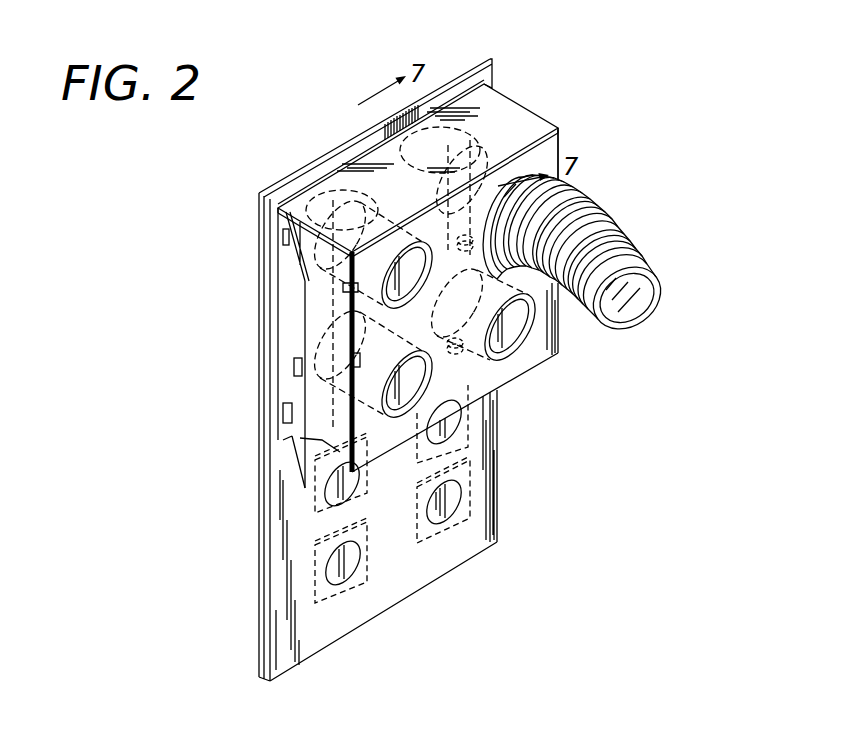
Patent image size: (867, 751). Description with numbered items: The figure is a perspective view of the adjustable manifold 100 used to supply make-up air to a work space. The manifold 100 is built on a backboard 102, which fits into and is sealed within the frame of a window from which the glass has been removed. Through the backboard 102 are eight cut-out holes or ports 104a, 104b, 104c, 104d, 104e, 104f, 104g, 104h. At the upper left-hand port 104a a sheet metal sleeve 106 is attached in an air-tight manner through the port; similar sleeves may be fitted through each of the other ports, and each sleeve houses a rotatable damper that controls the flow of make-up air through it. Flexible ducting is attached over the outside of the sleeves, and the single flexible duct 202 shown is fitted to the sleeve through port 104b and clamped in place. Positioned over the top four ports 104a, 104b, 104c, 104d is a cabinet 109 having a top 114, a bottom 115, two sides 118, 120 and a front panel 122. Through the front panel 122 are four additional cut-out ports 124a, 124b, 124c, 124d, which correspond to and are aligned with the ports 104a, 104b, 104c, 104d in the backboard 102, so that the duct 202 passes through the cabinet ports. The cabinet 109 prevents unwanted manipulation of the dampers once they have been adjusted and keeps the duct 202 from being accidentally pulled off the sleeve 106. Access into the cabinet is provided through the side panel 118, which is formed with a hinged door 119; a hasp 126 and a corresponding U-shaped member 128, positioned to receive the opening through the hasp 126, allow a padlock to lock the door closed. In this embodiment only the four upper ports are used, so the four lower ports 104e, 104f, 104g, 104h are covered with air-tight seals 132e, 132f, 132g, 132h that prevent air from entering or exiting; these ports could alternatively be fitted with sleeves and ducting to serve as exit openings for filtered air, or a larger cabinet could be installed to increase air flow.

The adjustable manifold 100 is at (553, 80).
The backboard 102 is at (277, 473).
The cut-out port 104a is at (283, 250).
The cut-out port 104b is at (455, 140).
The cut-out port 104c is at (327, 353).
The cut-out port 104d is at (480, 268).
The cut-out port 104e is at (330, 500).
The cut-out port 104f is at (452, 443).
The cut-out port 104g is at (333, 576).
The cut-out port 104h is at (458, 505).
The sheet metal sleeve 106 is at (333, 298).
The cabinet 109 is at (338, 178).
The top 114 is at (462, 103).
The bottom 115 is at (297, 440).
The side 118 is at (277, 222).
The hinged door 119 is at (290, 277).
The side 120 is at (535, 120).
The front panel 122 is at (560, 186).
The cut-out port 124a is at (415, 248).
The cut-out port 124b is at (495, 185).
The cut-out port 124c is at (420, 372).
The cut-out port 124d is at (512, 338).
The hasp 126 is at (288, 377).
The U-shaped member 128 is at (300, 438).
The air-tight seal 132e is at (316, 524).
The air-tight seal 132f is at (468, 428).
The air-tight seal 132g is at (365, 584).
The air-tight seal 132h is at (462, 518).
The flexible hose 202 is at (607, 242).